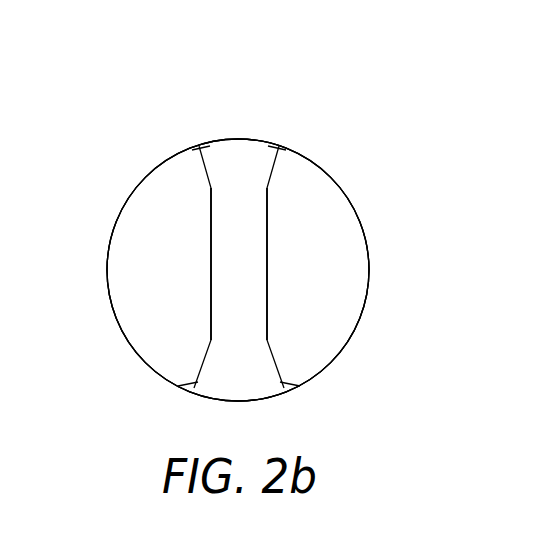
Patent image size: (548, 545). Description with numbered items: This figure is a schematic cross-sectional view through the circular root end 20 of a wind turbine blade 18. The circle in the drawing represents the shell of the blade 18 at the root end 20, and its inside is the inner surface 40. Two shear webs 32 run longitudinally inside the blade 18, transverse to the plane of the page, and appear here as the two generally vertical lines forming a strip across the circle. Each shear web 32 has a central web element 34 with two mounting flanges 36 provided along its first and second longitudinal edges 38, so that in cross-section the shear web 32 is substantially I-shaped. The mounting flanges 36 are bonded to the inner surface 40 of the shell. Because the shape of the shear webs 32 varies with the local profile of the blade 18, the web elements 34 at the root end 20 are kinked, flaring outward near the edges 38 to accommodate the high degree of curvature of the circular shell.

The wind turbine blade 18 is at (261, 83).
The root end 20 is at (109, 368).
The shear web 32 is at (211, 236).
The web element 34 is at (268, 236).
The mounting flange 36 is at (198, 147).
The longitudinal edge 38 is at (275, 154).
The inner surface 40 is at (359, 285).